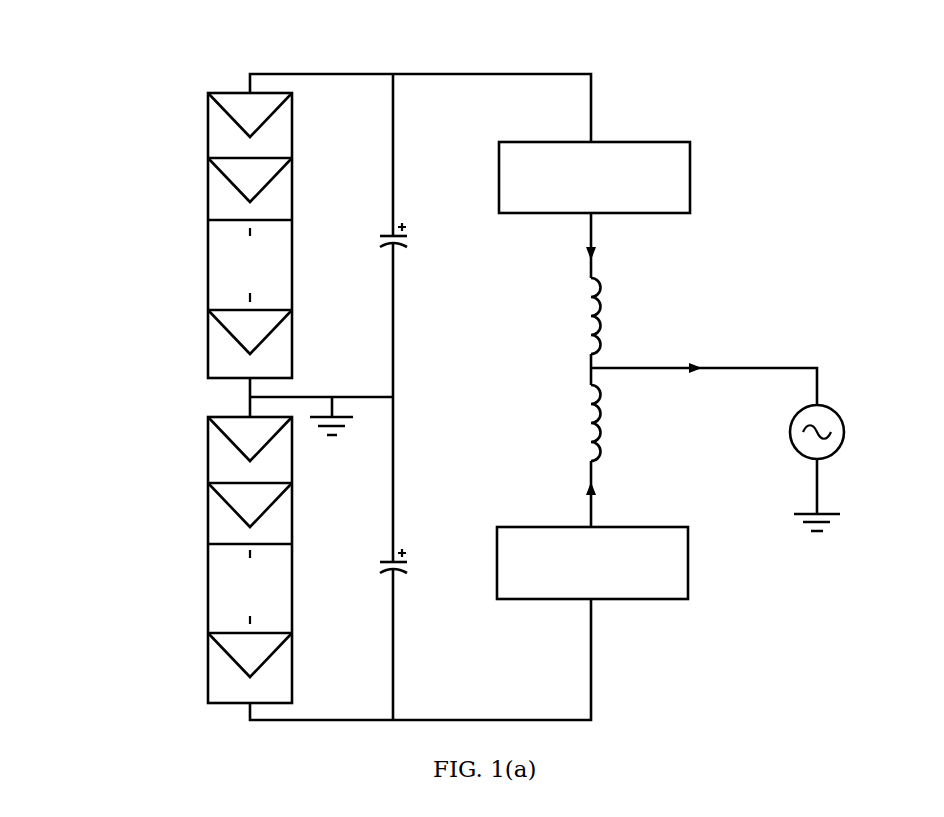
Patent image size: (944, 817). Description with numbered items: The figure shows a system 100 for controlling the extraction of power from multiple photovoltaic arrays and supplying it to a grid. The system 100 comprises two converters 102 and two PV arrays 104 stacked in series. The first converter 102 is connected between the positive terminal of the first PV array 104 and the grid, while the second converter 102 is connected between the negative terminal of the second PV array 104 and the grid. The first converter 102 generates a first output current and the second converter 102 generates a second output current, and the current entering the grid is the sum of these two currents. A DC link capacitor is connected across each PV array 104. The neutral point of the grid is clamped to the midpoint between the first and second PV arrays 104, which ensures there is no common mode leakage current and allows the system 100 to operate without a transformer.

The system 100 is at (150, 70).
The converter 102 is at (690, 183).
The Photo Voltaic (PV) array 104 is at (208, 310).